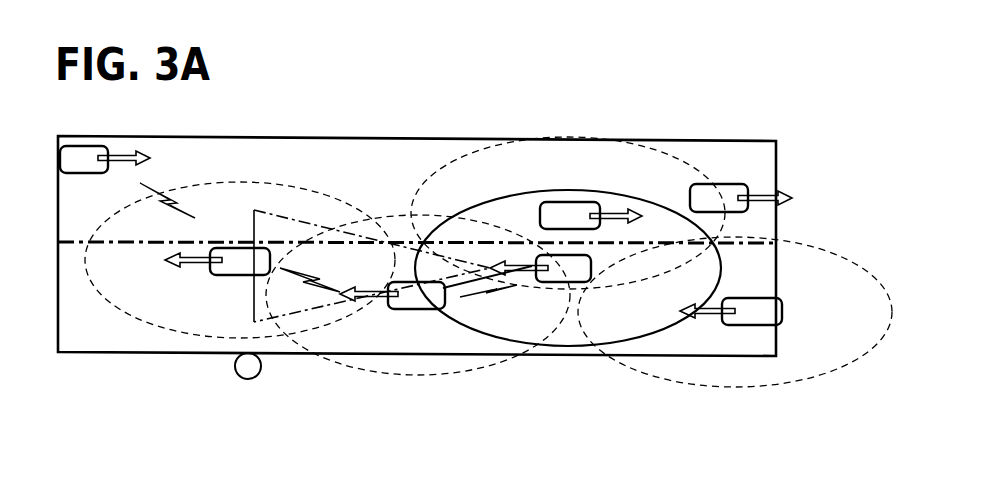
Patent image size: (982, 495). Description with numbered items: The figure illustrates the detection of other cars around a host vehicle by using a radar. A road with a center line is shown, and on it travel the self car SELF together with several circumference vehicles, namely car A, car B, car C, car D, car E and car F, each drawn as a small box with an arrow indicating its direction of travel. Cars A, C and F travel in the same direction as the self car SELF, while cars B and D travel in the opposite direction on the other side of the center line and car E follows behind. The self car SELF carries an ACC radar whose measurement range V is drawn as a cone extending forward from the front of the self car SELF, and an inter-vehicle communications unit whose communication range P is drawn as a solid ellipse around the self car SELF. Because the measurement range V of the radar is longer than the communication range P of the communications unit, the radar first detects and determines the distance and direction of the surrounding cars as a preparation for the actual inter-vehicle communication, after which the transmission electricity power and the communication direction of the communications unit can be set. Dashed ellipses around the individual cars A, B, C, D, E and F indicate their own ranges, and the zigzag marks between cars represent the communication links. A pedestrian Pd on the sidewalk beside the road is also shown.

The measurement range V is at (297, 220).
The communication range P is at (613, 195).
The pedestrian Pd is at (243, 378).
The car A is at (392, 295).
The car B is at (591, 215).
The car C is at (217, 261).
The car D is at (741, 198).
The car E is at (731, 311).
The car F is at (105, 159).
The self car SELF is at (540, 268).